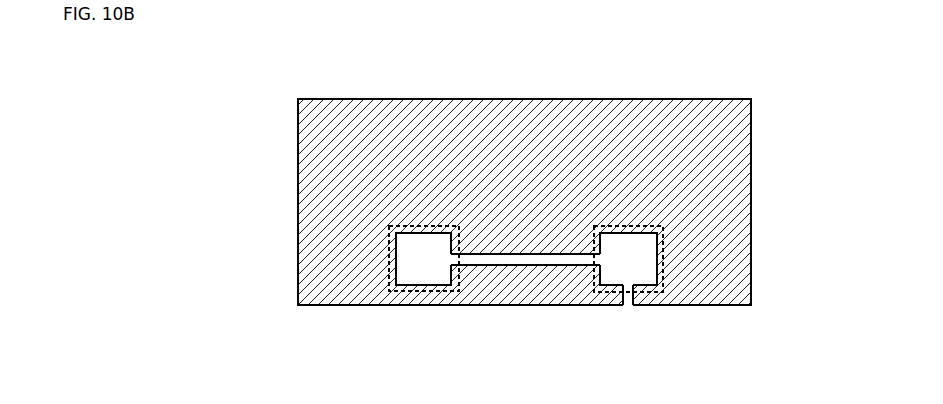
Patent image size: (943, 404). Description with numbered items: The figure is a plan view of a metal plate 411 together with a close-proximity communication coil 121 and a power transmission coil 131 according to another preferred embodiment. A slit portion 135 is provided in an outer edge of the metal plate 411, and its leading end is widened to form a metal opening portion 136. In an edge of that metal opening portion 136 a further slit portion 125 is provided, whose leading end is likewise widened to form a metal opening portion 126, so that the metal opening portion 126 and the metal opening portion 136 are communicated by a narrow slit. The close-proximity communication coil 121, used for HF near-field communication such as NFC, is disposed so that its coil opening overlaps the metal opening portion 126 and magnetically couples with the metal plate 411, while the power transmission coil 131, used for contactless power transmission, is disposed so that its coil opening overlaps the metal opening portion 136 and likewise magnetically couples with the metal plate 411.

The metal plate 411 is at (539, 112).
The close-proximity communication coil 121 is at (389, 272).
The power transmission coil 131 is at (663, 257).
The metal opening portion 126 is at (427, 269).
The slit portion 125 is at (525, 270).
The slit portion 135 is at (625, 307).
The metal opening portion 136 is at (646, 272).